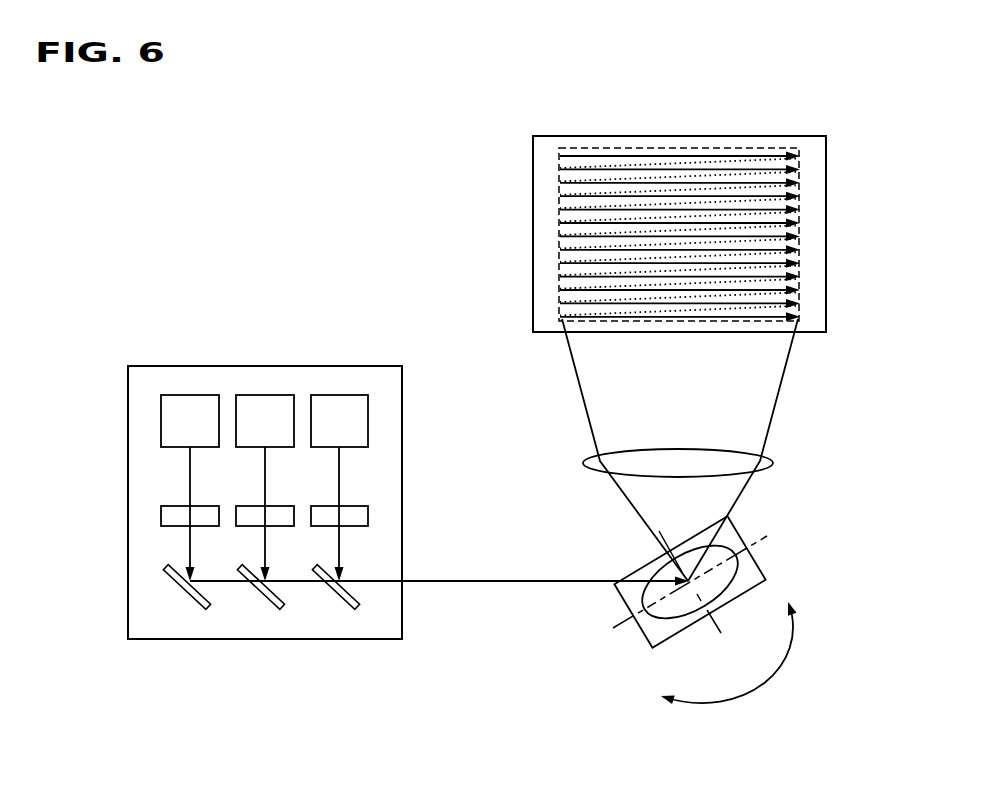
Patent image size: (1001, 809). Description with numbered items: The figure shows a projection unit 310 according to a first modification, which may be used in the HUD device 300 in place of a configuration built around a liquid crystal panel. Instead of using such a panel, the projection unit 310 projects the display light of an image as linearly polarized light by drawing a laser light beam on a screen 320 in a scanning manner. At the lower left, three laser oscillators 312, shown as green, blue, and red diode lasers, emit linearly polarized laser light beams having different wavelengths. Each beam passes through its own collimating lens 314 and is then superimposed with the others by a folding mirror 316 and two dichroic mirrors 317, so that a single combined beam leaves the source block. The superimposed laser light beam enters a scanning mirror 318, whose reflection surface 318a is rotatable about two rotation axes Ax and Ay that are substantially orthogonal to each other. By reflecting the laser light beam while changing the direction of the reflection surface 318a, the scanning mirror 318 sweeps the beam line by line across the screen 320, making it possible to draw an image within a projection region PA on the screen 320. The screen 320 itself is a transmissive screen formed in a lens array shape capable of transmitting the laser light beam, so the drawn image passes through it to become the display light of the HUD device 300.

The HUD device 300 is at (298, 182).
The projection unit 310 is at (492, 394).
The laser oscillator 312 is at (163, 447).
The collimating lens 314 is at (164, 526).
The folding mirror 316 is at (180, 591).
The dichroic mirror 317 is at (255, 591).
The scanning mirror 318 is at (640, 635).
The reflection surface 318a is at (646, 604).
The screen 320 is at (725, 134).
The projection region PA is at (603, 147).
The rotation axis Ax is at (758, 546).
The rotation axis Ay is at (708, 637).